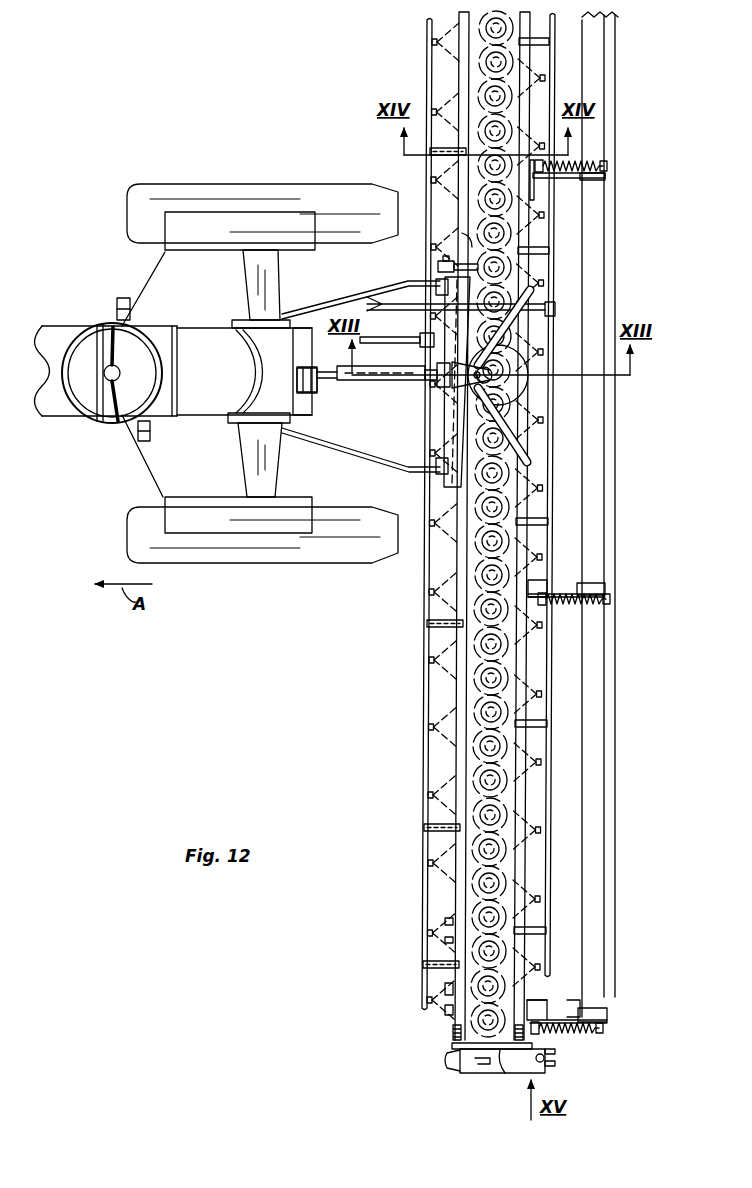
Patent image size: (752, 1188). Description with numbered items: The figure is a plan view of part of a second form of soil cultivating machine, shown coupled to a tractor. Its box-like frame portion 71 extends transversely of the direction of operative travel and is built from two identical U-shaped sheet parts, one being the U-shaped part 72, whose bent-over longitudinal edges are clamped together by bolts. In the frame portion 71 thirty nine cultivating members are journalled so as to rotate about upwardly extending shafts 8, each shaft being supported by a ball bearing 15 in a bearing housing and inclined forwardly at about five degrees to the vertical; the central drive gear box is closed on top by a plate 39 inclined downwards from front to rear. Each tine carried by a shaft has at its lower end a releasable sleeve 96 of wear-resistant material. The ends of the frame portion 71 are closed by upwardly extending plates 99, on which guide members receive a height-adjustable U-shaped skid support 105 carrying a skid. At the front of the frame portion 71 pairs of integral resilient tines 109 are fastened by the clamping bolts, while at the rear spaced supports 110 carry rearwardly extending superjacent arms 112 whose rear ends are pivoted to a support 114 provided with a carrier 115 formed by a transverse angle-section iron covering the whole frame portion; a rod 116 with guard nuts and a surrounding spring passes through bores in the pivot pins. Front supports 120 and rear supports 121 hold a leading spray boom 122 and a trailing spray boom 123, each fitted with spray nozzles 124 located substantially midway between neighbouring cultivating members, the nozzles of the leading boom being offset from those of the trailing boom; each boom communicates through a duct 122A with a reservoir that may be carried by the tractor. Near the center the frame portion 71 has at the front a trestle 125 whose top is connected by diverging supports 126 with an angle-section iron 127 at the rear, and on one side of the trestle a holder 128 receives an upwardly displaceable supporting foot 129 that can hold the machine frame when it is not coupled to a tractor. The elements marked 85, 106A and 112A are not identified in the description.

The upwardly extending shaft 8 is at (493, 62).
The ball bearing 15 is at (470, 773).
The plate 39 is at (510, 362).
The box-like frame portion 71 is at (457, 752).
The U-shaped part 72 is at (470, 688).
The cross member 85 is at (540, 43).
The releasable sleeve 96 is at (472, 1067).
The upwardly extending plate 99 is at (450, 1048).
The skid support 105 is at (515, 1049).
The fitting 106A is at (557, 1050).
The tine 109 is at (445, 940).
The support 110 is at (540, 1013).
The arm 112 is at (567, 175).
The bracket arm 112A is at (593, 183).
The support 114 is at (593, 180).
The carrier 115 is at (612, 290).
The rod 116 is at (605, 167).
The support 120 is at (432, 152).
The support 121 is at (542, 252).
The spray boom 122 is at (423, 645).
The duct 122A is at (378, 300).
The spray boom 123 is at (550, 663).
The spray nozzle 124 is at (428, 42).
The trestle 125 is at (437, 403).
The diverging support 126 is at (540, 326).
The angle-section iron 127 is at (527, 400).
The holder 128 is at (440, 265).
The supporting foot 129 is at (472, 247).